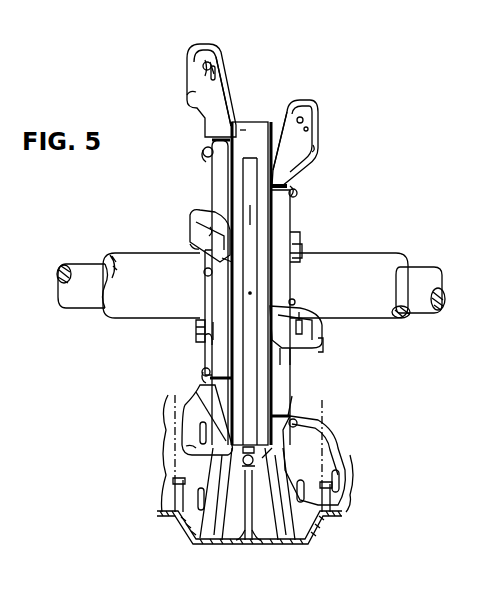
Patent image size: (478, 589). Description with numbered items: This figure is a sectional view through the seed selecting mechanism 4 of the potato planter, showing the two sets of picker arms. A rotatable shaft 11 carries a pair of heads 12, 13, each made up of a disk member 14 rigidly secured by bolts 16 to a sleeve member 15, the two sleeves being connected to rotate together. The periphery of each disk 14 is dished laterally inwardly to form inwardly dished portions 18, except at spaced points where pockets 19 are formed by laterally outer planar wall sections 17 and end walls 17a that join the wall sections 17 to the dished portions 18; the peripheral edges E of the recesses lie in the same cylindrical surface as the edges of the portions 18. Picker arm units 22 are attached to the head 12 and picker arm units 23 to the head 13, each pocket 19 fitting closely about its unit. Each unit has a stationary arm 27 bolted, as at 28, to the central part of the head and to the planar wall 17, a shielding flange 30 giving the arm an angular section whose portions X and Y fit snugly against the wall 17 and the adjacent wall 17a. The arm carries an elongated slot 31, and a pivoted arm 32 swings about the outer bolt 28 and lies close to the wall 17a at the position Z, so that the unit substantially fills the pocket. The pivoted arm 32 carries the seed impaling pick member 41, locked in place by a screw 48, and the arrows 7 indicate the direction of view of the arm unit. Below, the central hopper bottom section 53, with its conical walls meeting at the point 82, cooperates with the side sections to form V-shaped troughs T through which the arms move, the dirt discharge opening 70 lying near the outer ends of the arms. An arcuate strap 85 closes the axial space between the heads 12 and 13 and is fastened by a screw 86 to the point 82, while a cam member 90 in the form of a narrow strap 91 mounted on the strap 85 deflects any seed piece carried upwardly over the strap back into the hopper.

The seed selecting mechanism 4 is at (285, 70).
The section line 7 is at (203, 47).
The rotatable shaft 11 is at (420, 272).
The head 12 is at (304, 190).
The head 13 is at (208, 178).
The disk member 14 is at (283, 243).
The sleeve member 15 is at (125, 254).
The bolts 16 is at (300, 251).
The planar wall section 17 is at (212, 144).
The end wall 17a is at (204, 156).
The inwardly dished portion 18 is at (220, 330).
The pocket 19 is at (262, 150).
The picker arm unit 22 is at (321, 113).
The picker arm unit 23 is at (183, 80).
The stationary arm 27 is at (294, 118).
The bolts 28 is at (210, 158).
The shielding flange 30 is at (193, 92).
The elongated slot 31 is at (200, 428).
The pivoted arm 32 is at (215, 92).
The seed impaling pick member 41 is at (195, 66).
The screw 48 is at (212, 64).
The central hopper bottom section 53 is at (230, 546).
The dirt discharge opening 70 is at (213, 544).
The point 82 is at (262, 543).
The arcuate strap 85 is at (243, 132).
The screw 86 is at (273, 455).
The cam member 90 is at (258, 215).
The narrow strap 91 is at (251, 293).
The peripheral edges E is at (300, 184).
The V-shaped trough T is at (165, 512).
The arm portion X is at (218, 291).
The arm portion Y is at (219, 287).
The position of pivoted arm Z is at (218, 316).